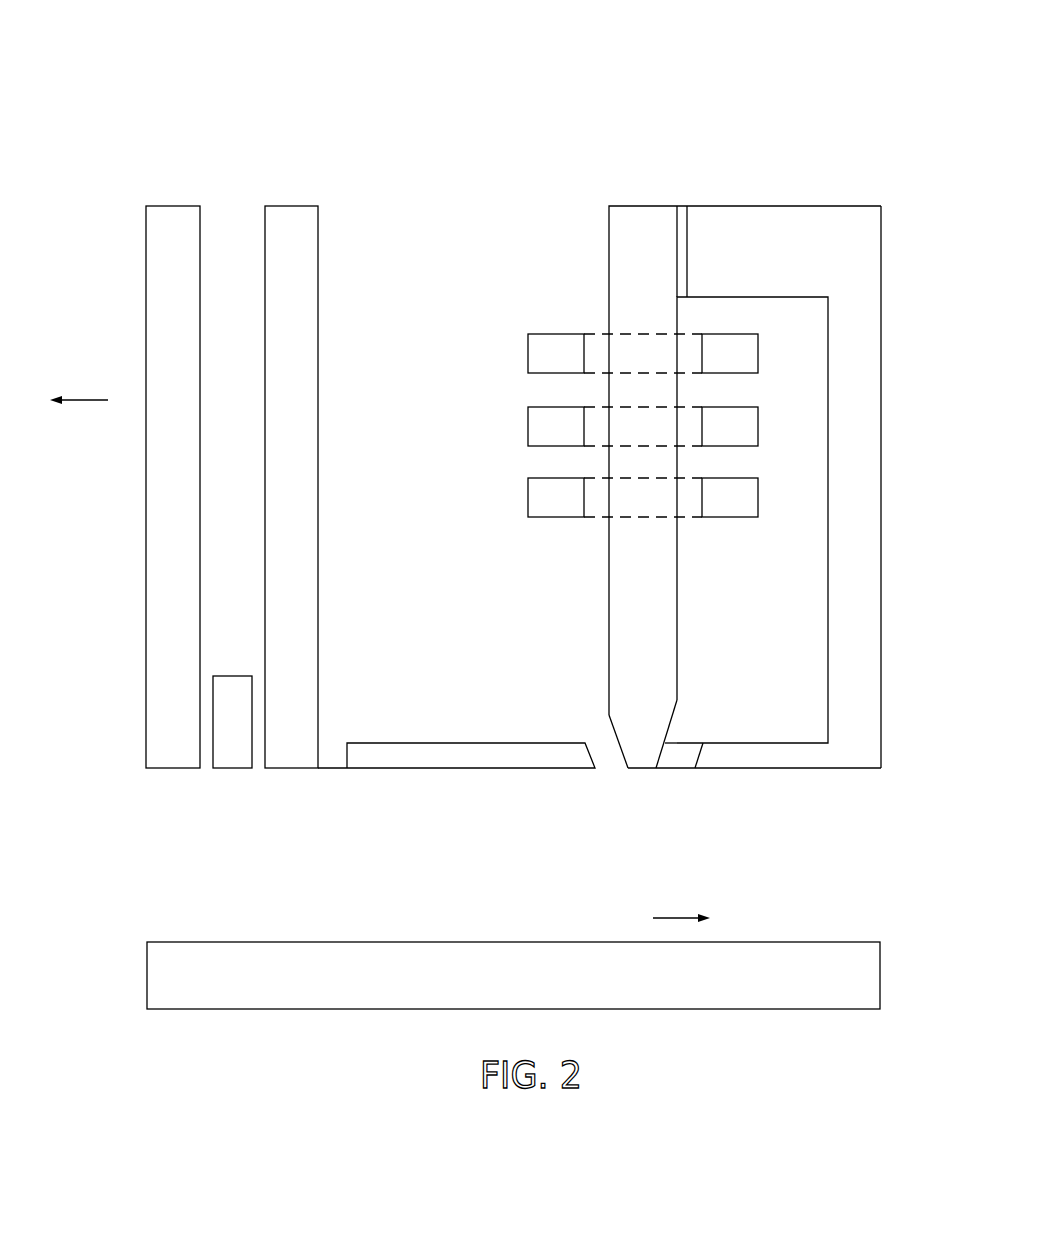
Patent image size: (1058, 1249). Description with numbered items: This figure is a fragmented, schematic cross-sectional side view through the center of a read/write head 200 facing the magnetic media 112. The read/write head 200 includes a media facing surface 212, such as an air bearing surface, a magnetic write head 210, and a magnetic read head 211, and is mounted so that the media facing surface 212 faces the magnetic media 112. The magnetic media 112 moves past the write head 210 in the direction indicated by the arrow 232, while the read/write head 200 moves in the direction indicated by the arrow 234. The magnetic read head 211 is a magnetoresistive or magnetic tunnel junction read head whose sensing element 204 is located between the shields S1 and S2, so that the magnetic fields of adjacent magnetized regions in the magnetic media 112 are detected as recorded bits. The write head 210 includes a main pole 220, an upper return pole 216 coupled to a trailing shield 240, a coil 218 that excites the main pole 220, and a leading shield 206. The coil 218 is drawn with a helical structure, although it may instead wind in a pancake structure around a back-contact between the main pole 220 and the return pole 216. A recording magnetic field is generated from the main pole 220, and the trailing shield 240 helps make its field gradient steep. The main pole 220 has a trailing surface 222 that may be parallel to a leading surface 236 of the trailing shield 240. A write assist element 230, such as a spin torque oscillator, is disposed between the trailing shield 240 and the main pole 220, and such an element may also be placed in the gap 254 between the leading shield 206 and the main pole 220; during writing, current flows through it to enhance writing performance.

The read/write head 200 is at (142, 32).
The magnetic read head 211 is at (322, 141).
The magnetic write head 210 is at (885, 141).
The MR shield S1 is at (170, 770).
The MR sensing element 204 is at (233, 770).
The MR shield S2 is at (295, 770).
The leading shield 206 is at (395, 770).
The gap 254 is at (610, 765).
The main pole 220 is at (620, 725).
The trailing surface 222 is at (677, 680).
The write assist element 230 is at (680, 757).
The media facing surface 212 is at (818, 770).
The trailing shield 240 is at (881, 732).
The return pole 216 is at (858, 258).
The leading surface 236 is at (828, 598).
The coil 218 is at (556, 519).
The arrow 234 is at (89, 400).
The arrow 232 is at (670, 916).
The magnetic media 112 is at (880, 975).